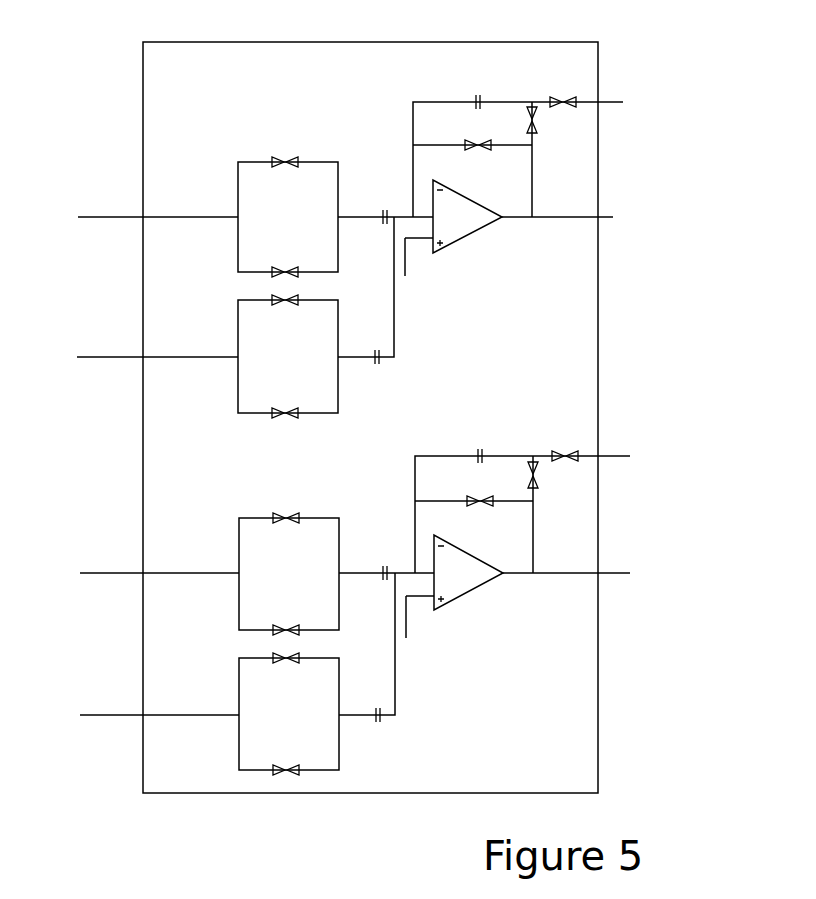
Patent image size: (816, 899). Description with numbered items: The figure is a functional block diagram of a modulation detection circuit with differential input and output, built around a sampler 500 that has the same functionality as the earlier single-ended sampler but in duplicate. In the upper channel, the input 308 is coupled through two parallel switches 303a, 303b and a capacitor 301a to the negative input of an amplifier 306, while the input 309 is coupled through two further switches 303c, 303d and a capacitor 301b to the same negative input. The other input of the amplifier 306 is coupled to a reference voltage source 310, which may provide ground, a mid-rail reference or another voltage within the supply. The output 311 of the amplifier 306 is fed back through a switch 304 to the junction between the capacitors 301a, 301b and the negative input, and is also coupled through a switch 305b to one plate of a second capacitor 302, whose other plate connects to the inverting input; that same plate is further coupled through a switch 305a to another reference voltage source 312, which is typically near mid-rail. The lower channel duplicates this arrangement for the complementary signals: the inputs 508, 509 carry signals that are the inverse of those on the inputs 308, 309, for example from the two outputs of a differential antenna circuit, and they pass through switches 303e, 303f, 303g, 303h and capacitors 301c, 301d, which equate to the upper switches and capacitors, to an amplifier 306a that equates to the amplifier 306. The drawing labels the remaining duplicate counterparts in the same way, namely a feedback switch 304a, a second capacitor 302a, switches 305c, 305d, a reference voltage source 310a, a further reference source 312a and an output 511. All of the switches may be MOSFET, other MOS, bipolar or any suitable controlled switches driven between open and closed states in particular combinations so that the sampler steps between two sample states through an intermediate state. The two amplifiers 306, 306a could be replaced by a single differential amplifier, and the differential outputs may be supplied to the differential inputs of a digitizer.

The sampler 500 is at (598, 348).
The input 308 is at (140, 218).
The input 309 is at (139, 356).
The input 508 is at (142, 574).
The input 509 is at (142, 716).
The output 311 is at (578, 220).
The second output terminal 511 is at (590, 574).
The reference voltage source 312 is at (631, 105).
The second feedback/reference terminal 312a is at (642, 458).
The capacitor 301a is at (383, 213).
The capacitor 301b is at (375, 352).
The capacitor 301c is at (383, 569).
The capacitor 301d is at (376, 710).
The second capacitor 302 is at (480, 97).
The feedback capacitor 302a is at (480, 454).
The switch 303a is at (286, 160).
The switch 303b is at (283, 270).
The switch 303c is at (283, 298).
The switch 303d is at (283, 411).
The switch 303e is at (287, 516).
The switch 303f is at (284, 628).
The switch 303g is at (284, 656).
The switch 303h is at (284, 768).
The switch 304 is at (481, 152).
The feedback diode pair 304a is at (482, 508).
The switch 305a is at (575, 98).
The switch 305b is at (535, 117).
The diode pair 305c is at (585, 435).
The diode pair 305d is at (536, 472).
The amplifier 306 is at (467, 216).
The amplifier 306a is at (468, 572).
The reference voltage source 310 is at (420, 267).
The reference input node 310a is at (426, 626).